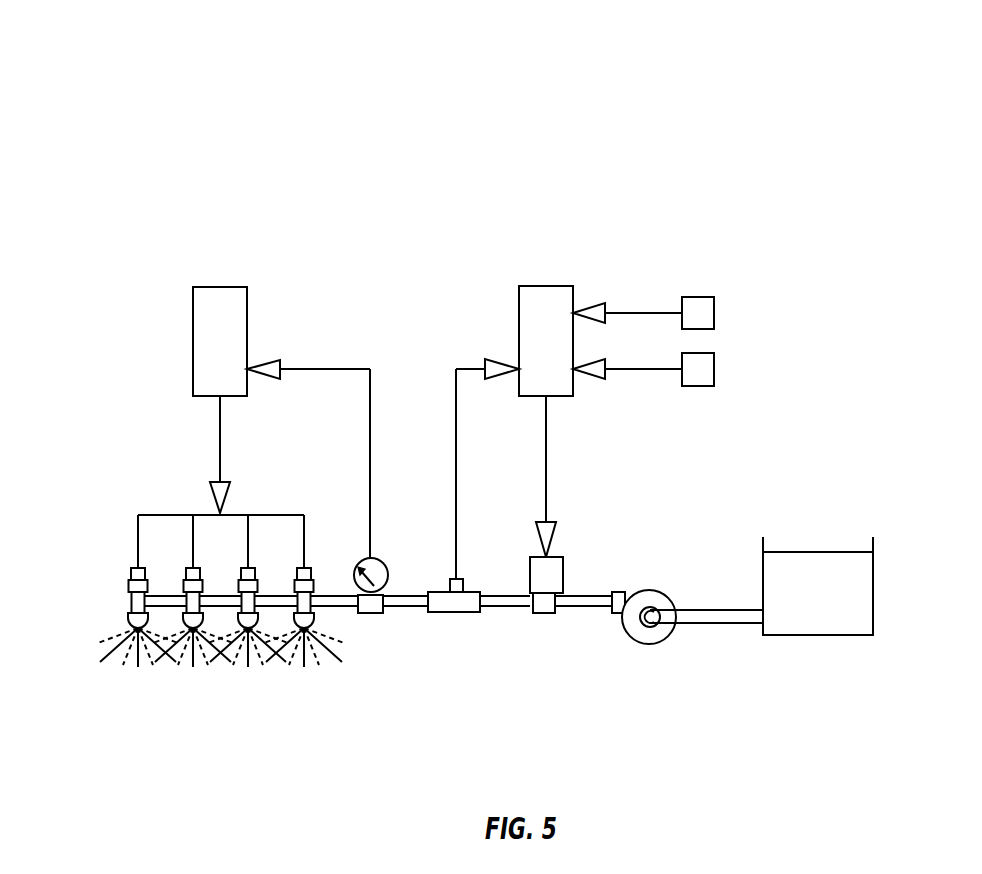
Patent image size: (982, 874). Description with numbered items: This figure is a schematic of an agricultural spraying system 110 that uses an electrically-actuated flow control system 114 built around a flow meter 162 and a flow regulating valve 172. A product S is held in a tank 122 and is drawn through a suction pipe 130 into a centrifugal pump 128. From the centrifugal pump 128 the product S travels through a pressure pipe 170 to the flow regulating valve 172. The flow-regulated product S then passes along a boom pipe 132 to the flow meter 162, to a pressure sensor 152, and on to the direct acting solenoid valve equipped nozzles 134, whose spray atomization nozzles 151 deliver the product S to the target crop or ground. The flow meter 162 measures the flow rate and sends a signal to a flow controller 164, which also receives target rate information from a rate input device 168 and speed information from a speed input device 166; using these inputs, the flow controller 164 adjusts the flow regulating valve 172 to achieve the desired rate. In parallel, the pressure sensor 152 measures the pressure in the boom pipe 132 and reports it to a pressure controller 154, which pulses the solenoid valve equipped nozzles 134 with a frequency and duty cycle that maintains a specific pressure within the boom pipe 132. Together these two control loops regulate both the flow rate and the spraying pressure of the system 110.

The agricultural spraying system 110 is at (705, 64).
The electrically-actuated flow control system 114 is at (162, 265).
The tank 122 is at (823, 635).
The centrifugal pump 128 is at (662, 590).
The suction pipe 130 is at (707, 625).
The boom pipe 132 is at (508, 608).
The direct acting solenoid valve equipped nozzles 134 is at (130, 580).
The spray atomization nozzles 151 is at (307, 627).
The pressure sensor 152 is at (373, 558).
The pressure controller 154 is at (220, 287).
The flow meter 162 is at (453, 613).
The flow controller 164 is at (546, 286).
The speed input device 166 is at (707, 386).
The rate input device 168 is at (703, 297).
The pressure pipe 170 is at (585, 608).
The flow regulating valve 172 is at (563, 557).
The product S is at (110, 647).